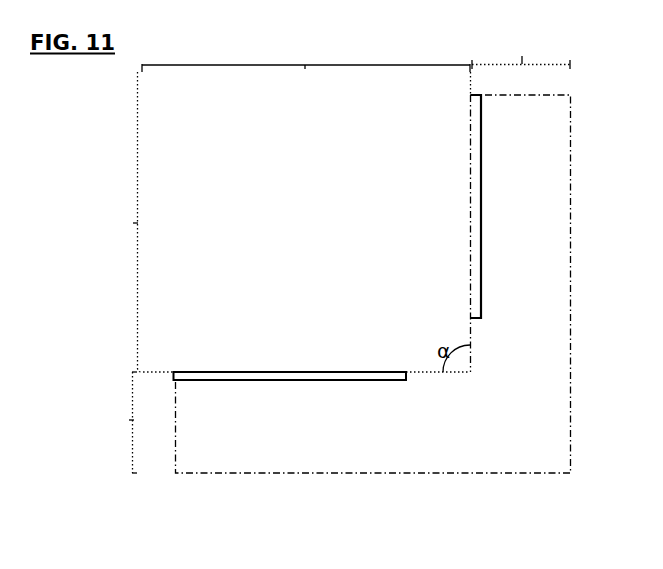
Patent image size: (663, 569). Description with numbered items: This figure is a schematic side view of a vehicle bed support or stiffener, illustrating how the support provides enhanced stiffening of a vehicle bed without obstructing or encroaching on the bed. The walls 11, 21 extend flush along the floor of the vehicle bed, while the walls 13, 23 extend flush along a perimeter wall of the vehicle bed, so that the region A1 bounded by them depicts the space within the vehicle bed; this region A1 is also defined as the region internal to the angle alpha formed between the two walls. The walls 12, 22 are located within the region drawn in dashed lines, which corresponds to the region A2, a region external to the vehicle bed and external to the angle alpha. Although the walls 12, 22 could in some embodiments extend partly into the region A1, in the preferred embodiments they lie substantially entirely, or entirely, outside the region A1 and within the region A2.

The wall 11 is at (290, 348).
The wall 21 is at (290, 375).
The wall 12 is at (373, 316).
The wall 22 is at (397, 459).
The wall 13 is at (433, 206).
The wall 23 is at (470, 168).
The region within the vehicle bed A1 is at (279, 206).
The region external to the vehicle bed A2 is at (341, 271).